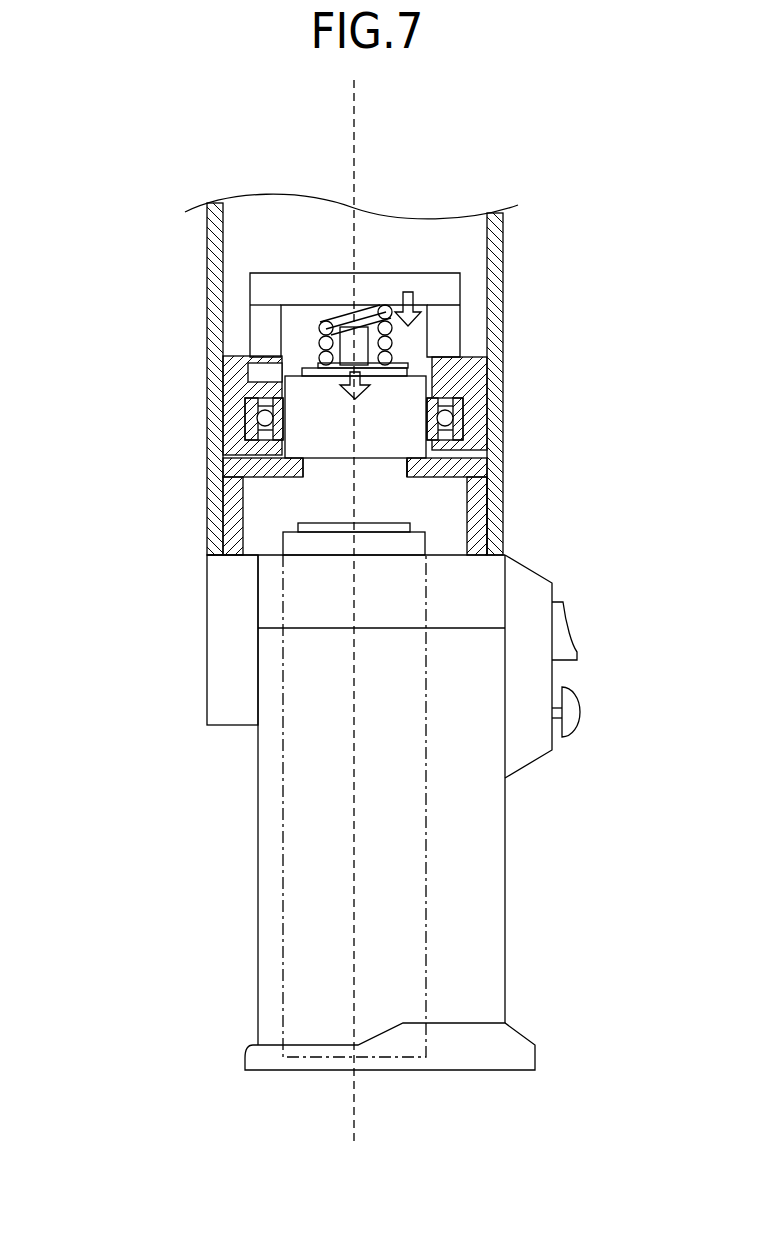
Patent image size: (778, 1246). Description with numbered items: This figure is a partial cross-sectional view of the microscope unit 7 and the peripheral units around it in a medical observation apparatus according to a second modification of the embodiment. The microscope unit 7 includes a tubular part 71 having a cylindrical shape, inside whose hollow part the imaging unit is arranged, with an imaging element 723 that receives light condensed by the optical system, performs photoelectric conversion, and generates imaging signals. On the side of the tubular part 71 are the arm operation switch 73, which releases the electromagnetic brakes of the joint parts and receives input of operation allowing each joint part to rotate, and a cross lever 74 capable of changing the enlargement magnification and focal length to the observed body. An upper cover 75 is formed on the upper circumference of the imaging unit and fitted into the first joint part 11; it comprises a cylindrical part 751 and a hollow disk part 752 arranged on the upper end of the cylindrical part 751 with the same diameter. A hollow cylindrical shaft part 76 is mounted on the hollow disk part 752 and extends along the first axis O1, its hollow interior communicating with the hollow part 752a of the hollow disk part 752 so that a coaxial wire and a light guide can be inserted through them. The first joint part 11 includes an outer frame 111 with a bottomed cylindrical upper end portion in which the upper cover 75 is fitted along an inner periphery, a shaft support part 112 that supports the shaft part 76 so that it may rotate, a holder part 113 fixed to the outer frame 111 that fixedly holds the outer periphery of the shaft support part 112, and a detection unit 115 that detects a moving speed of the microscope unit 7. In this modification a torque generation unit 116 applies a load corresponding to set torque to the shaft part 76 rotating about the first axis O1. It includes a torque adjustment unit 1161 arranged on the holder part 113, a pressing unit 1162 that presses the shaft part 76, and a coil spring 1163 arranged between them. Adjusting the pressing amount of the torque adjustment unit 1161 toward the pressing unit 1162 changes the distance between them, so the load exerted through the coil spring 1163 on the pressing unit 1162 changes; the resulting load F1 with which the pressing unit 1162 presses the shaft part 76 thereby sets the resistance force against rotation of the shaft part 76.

The microscope unit 7 is at (508, 880).
The tubular part 71 is at (258, 870).
The arm operation switch 73 is at (562, 636).
The cross lever 74 is at (573, 710).
The upper cover 75 is at (470, 492).
The cylindrical part 751 is at (497, 505).
The hollow disk part 752 is at (233, 467).
The hollow part 752a is at (407, 462).
The imaging element 723 is at (297, 523).
The shaft part 76 is at (315, 385).
The first joint part 11 is at (218, 347).
The outer frame 111 is at (218, 281).
The shaft support part 112 is at (248, 427).
The holder part 113 is at (240, 412).
The detection unit 115 is at (248, 373).
The torque generation unit 116 is at (470, 265).
The torque adjustment unit 1161 is at (430, 290).
The pressing unit 1162 is at (400, 366).
The coil spring 1163 is at (395, 341).
The first axis O1 is at (354, 106).
The load F1 is at (367, 378).